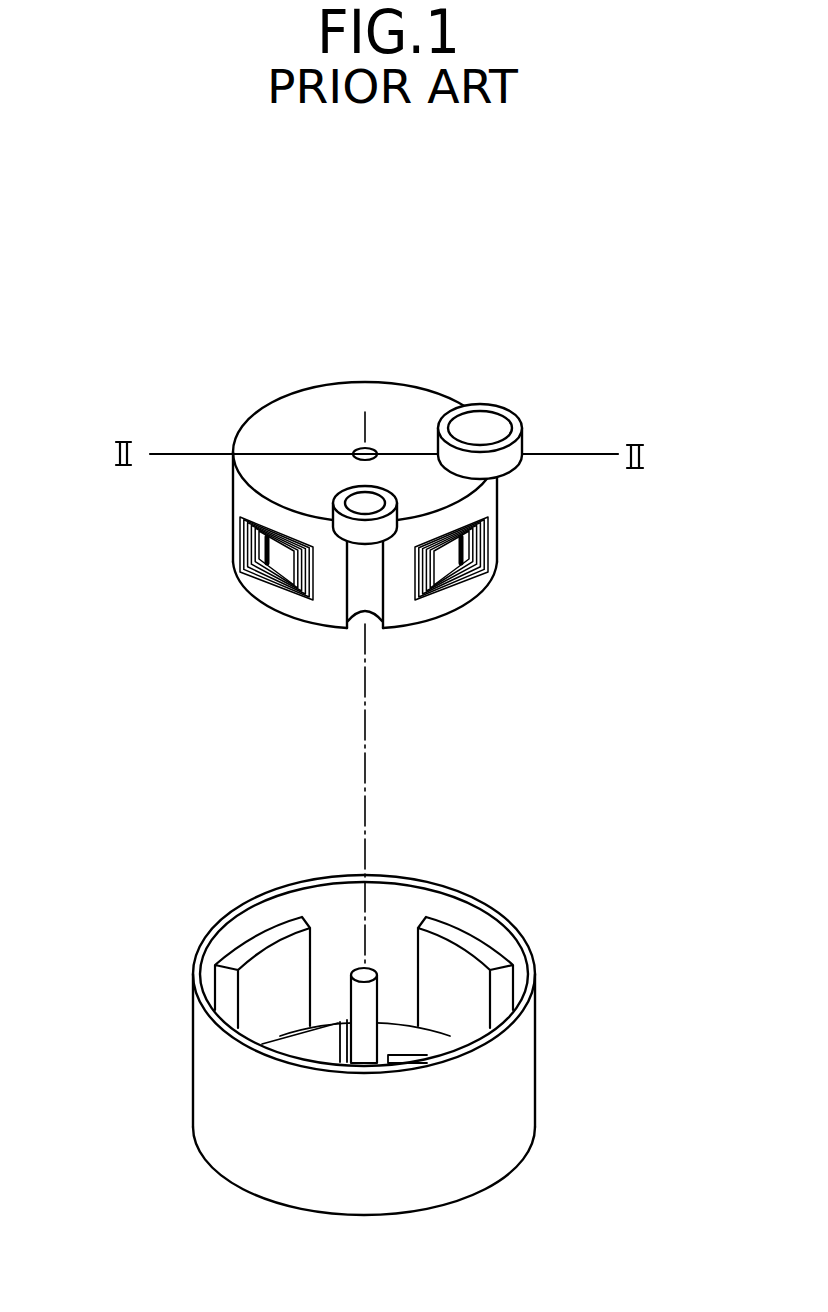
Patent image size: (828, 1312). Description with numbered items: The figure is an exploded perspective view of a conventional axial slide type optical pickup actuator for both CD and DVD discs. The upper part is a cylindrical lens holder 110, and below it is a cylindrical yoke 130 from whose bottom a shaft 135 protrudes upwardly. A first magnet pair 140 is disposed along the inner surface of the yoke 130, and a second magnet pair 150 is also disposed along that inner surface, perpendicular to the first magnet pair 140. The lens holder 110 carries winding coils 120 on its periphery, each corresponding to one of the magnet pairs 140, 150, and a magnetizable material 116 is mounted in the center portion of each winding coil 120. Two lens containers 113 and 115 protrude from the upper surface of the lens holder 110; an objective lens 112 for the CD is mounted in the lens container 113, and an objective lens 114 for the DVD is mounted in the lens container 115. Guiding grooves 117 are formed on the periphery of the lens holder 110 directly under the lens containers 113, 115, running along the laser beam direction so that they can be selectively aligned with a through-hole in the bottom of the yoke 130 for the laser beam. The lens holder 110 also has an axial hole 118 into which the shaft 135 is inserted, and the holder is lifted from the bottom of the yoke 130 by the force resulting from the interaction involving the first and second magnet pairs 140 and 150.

The lens holder 110 is at (348, 387).
The objective lens for the CD 112 is at (358, 497).
The lens container 113 is at (395, 519).
The objective lens for the DVD 114 is at (480, 414).
The lens container 115 is at (517, 447).
The coil core 116 is at (266, 551).
The guiding groove 117 is at (372, 577).
The axial hole 118 is at (368, 448).
The winding coil 120 is at (277, 587).
The cylindrical yoke 130 is at (520, 1075).
The shaft 135 is at (372, 994).
The first magnet pair 140 is at (253, 940).
The second magnet pair 150 is at (442, 948).